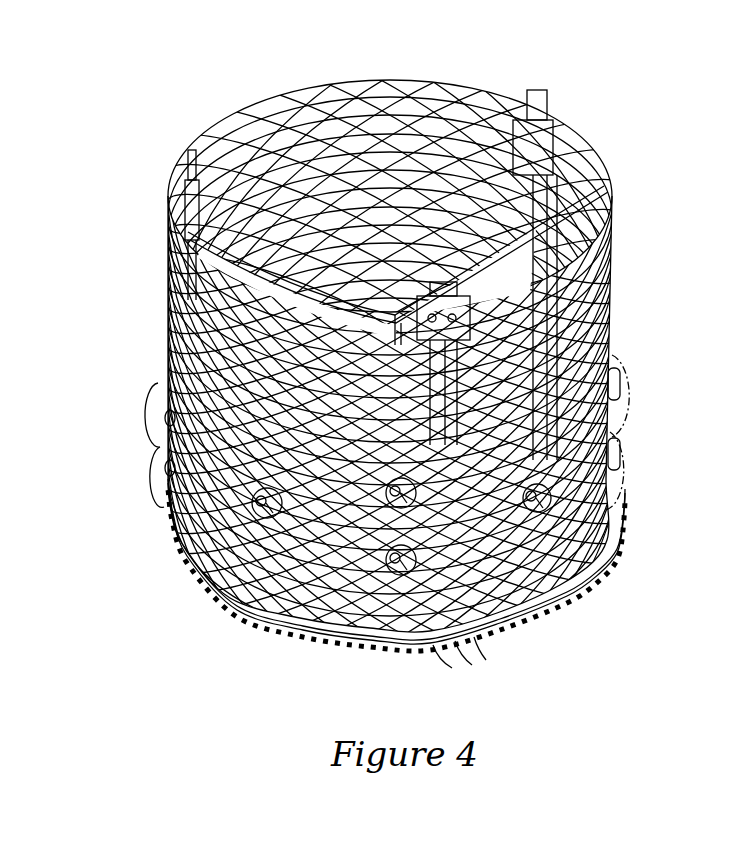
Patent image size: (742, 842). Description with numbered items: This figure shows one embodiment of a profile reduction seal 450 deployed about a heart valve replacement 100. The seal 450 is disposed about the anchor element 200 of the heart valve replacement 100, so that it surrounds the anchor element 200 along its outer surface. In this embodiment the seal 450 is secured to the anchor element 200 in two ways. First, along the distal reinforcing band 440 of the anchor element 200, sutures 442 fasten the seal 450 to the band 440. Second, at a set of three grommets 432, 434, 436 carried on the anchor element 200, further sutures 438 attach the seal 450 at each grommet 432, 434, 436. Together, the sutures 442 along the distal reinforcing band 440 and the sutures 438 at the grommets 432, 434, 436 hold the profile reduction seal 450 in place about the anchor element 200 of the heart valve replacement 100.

The heart valve replacement 100 is at (527, 41).
The anchor element 200 is at (268, 106).
The grommet 432 is at (617, 383).
The grommet 434 is at (535, 503).
The grommet 436 is at (617, 450).
The sutures 438 is at (400, 503).
The distal reinforcing band 440 is at (531, 604).
The sutures 442 is at (474, 641).
The profile reduction seal 450 is at (160, 473).